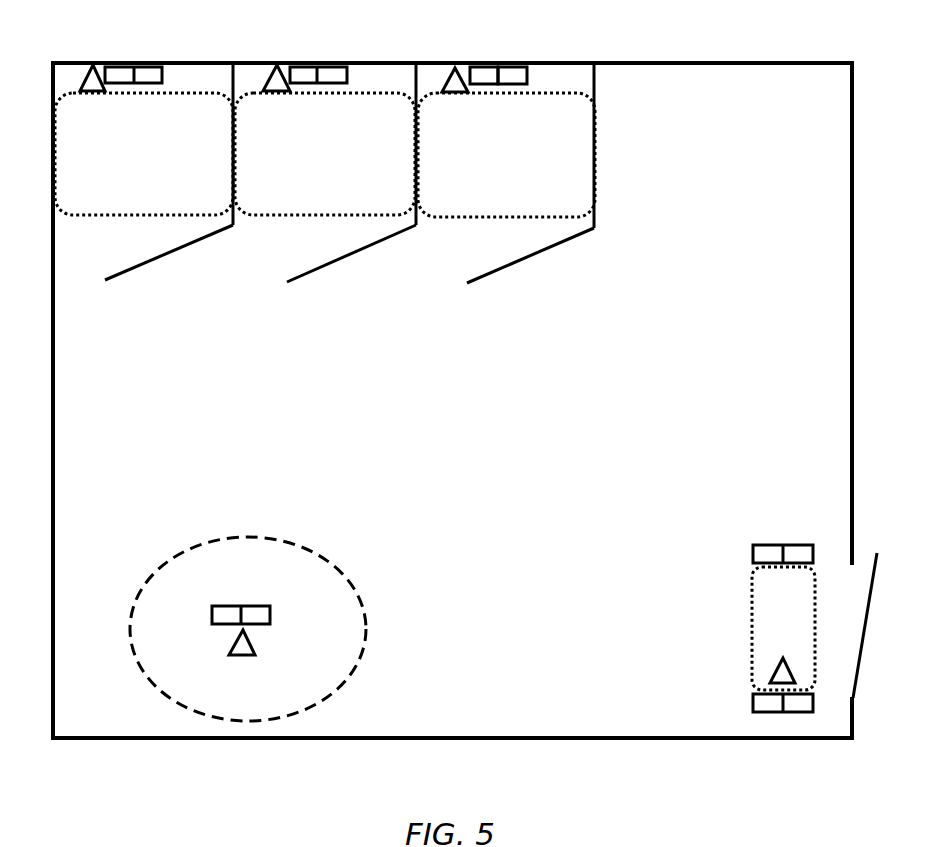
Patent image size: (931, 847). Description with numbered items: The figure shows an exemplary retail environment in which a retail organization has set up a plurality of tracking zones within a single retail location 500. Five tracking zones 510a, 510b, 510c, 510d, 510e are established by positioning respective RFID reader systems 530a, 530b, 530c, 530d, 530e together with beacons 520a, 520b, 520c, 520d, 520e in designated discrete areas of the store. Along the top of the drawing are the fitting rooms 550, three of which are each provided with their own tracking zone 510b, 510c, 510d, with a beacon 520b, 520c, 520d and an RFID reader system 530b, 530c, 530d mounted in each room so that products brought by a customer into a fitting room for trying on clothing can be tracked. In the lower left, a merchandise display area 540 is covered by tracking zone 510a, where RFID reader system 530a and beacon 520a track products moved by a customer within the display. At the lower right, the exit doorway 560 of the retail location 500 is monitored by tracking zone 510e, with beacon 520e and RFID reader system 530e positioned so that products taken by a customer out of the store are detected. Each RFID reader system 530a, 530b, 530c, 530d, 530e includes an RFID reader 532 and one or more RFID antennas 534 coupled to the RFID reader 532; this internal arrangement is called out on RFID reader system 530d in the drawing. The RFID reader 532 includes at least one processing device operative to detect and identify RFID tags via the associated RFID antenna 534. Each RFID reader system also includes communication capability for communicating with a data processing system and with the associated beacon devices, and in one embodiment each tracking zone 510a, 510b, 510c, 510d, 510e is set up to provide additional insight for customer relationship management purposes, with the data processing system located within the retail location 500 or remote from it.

The retail location 500 is at (838, 120).
The tracking zone 510a is at (367, 630).
The tracking zone 510b is at (103, 216).
The tracking zone 510c is at (287, 218).
The tracking zone 510d is at (468, 218).
The tracking zone 510e is at (750, 617).
The beacon 520a is at (240, 660).
The beacon 520b is at (93, 98).
The beacon 520c is at (273, 93).
The beacon 520d is at (455, 93).
The beacon 520e is at (770, 675).
The RFID reader system 530a is at (250, 605).
The RFID reader system 530b is at (133, 95).
The RFID reader system 530c is at (315, 85).
The RFID reader system 530d is at (493, 75).
The RFID reader system 530e is at (753, 553).
The RFID reader 532 is at (482, 65).
The RFID antenna 534 is at (503, 65).
The merchandise display area 540 is at (277, 602).
The fitting rooms 550 is at (325, 170).
The exit doorway 560 is at (767, 598).